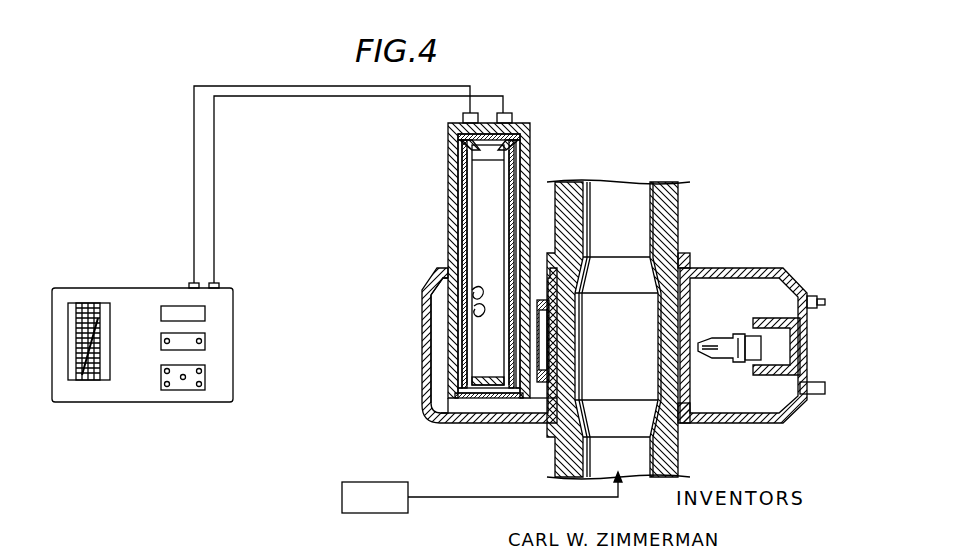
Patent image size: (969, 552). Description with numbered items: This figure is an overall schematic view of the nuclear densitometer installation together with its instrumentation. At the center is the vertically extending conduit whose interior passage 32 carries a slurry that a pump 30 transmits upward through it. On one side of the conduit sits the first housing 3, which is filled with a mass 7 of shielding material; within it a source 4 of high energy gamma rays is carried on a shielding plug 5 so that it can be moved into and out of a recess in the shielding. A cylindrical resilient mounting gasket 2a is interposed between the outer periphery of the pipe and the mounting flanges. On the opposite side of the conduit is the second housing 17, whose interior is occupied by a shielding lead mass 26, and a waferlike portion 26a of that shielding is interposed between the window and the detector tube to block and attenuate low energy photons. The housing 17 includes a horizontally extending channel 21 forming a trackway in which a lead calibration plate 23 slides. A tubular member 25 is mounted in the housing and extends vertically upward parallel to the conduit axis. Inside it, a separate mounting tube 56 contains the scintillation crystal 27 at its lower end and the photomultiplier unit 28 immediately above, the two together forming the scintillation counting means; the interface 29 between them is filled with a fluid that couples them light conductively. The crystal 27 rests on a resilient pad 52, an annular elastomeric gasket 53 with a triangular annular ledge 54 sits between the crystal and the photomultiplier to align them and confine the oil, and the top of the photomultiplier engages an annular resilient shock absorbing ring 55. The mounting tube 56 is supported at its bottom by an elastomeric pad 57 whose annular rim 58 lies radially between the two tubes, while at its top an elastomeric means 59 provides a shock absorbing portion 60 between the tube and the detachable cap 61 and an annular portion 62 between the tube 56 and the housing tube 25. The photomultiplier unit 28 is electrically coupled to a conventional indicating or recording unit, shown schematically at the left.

The first housing 3 is at (233, 352).
The detachable cap 61 is at (462, 120).
The shock absorbing portion 60 is at (503, 135).
The annular resilient shock absorbing ring 55 is at (520, 145).
The elastomeric means 59 is at (463, 142).
The annular shock absorbing portion 62 is at (455, 160).
The mounting tube 56 is at (460, 190).
The photomultiplier unit 28 is at (493, 185).
The tubular member 25 is at (450, 217).
The scintillation crystal 27 is at (483, 341).
The annular elastomeric gasket 53 is at (476, 298).
The annular ledge 54 is at (478, 313).
The resilient pad 52 is at (496, 390).
The shock absorbing elastomeric pad 57 is at (472, 393).
The annular rim 58 is at (453, 396).
The channel 21 is at (545, 400).
The second housing 17 is at (428, 365).
The shielding lead mass 26 is at (438, 383).
The waferlike portion 26a is at (550, 343).
The interior passage 32 is at (626, 383).
The interface 29 is at (548, 268).
The calibration plate 23 is at (582, 307).
The resilient mounting gasket 2a is at (683, 323).
The mass of shielding material 7 is at (732, 306).
The source 4 is at (722, 355).
The shielding plug 5 is at (777, 360).
The pump 30 is at (380, 507).